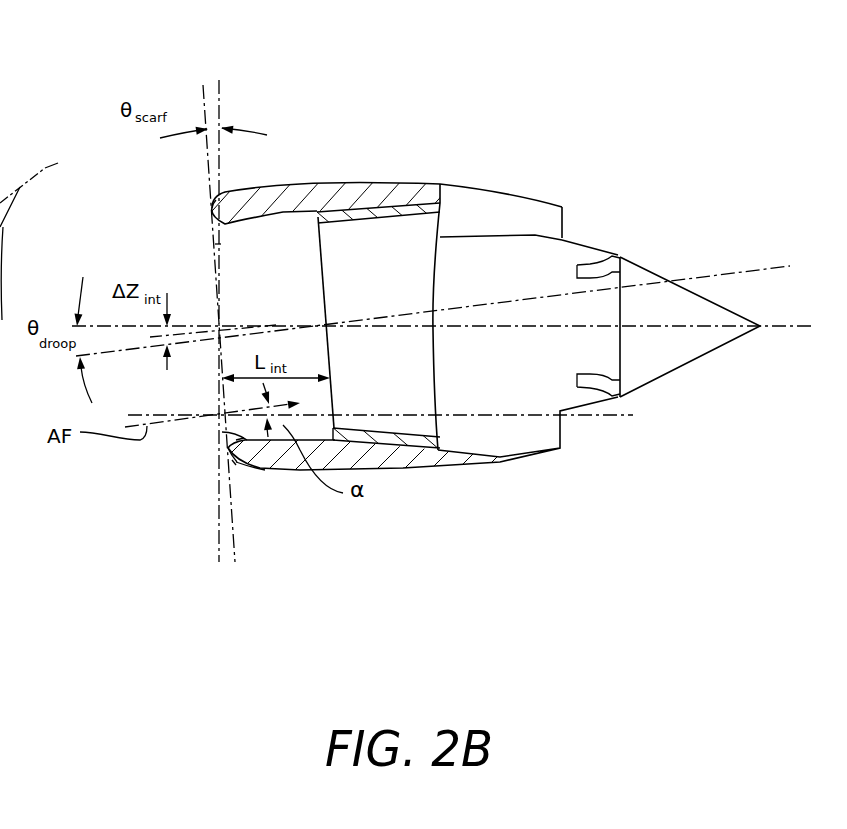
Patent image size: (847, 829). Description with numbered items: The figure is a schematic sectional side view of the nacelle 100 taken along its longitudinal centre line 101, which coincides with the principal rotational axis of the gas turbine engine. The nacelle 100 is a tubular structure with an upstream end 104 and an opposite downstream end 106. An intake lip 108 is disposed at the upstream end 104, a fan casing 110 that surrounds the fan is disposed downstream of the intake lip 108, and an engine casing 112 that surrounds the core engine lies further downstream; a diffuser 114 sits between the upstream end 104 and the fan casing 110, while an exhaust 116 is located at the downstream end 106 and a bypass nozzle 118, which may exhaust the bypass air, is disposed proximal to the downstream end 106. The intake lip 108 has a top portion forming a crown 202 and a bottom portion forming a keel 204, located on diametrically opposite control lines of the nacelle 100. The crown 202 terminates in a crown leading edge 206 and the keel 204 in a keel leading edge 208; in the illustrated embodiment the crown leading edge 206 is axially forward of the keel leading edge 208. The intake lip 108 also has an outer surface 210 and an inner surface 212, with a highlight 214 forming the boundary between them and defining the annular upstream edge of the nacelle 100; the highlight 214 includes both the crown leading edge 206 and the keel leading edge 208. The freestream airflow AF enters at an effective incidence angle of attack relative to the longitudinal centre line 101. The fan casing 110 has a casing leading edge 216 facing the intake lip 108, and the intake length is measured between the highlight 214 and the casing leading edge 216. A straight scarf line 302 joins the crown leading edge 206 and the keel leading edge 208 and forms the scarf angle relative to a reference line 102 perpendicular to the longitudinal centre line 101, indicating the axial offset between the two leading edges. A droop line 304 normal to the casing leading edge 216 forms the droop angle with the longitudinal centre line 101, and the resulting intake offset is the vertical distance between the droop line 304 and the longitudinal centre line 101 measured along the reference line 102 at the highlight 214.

The nacelle 100 is at (528, 90).
The longitudinal centre line 101 is at (45, 168).
The reference line 102 is at (222, 83).
The upstream end 104 is at (168, 277).
The downstream end 106 is at (631, 192).
The intake lip 108 is at (232, 460).
The fan casing 110 is at (409, 452).
The engine casing 112 is at (493, 433).
The diffuser 114 is at (272, 279).
The exhaust 116 is at (652, 385).
The bypass nozzle 118 is at (570, 223).
The crown 202 is at (208, 196).
The keel 204 is at (238, 472).
The crown leading edge 206 is at (210, 210).
The keel leading edge 208 is at (222, 432).
The outer surface 210 is at (236, 462).
The inner surface 212 is at (242, 438).
The highlight 214 is at (215, 245).
The casing leading edge 216 is at (318, 256).
The scarf line 302 is at (205, 108).
The droop line 304 is at (703, 277).